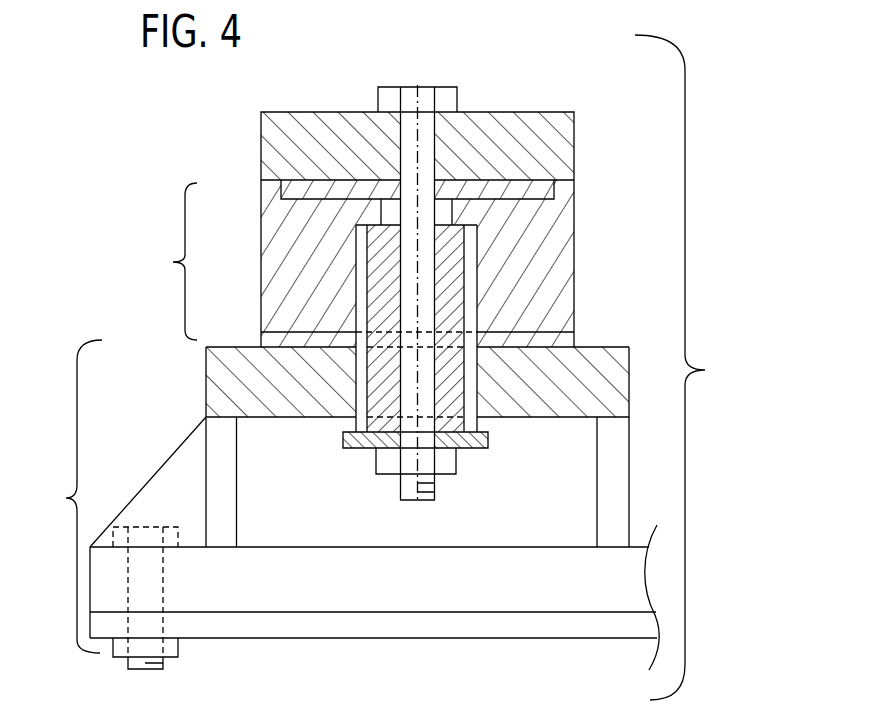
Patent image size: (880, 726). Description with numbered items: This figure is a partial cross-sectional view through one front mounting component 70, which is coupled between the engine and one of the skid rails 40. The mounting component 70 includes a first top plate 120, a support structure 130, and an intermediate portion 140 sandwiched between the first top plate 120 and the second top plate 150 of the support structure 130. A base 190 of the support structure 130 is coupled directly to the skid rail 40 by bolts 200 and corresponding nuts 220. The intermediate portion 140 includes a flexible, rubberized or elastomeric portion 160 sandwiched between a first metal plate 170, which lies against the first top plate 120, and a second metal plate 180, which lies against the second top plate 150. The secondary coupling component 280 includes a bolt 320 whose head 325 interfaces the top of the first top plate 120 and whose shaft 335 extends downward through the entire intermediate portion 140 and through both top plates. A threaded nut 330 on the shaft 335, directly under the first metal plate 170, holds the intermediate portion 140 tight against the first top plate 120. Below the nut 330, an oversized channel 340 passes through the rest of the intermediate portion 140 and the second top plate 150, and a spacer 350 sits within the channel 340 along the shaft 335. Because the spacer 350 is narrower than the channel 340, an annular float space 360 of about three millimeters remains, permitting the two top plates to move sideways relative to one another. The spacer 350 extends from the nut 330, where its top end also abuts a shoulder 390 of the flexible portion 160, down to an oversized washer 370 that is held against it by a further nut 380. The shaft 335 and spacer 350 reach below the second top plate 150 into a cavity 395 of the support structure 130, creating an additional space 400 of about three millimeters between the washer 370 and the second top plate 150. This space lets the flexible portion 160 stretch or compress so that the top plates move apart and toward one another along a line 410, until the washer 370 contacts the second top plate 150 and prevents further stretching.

The skid rail 40 is at (416, 652).
The front mounting component 70 is at (705, 370).
The first top plate 120 is at (255, 160).
The support structure 130 is at (66, 498).
The intermediate portion 140 is at (164, 261).
The second top plate 150 is at (197, 395).
The flexible portion 160 is at (575, 237).
The first metal plate 170 is at (553, 192).
The second metal plate 180 is at (574, 342).
The base 190 is at (272, 593).
The bolt 200 is at (164, 566).
The nut 220 is at (170, 645).
The secondary coupling component 280 is at (448, 150).
The bolt 320 is at (389, 147).
The head 325 is at (425, 87).
The threaded nut 330 is at (463, 212).
The shaft 335 is at (437, 170).
The channel 340 is at (489, 294).
The spacer 350 is at (350, 288).
The annular float space 360 is at (457, 373).
The oversized washer 370 is at (497, 459).
The nut 380 is at (462, 481).
The shoulder 390 is at (377, 212).
The cavity 395 is at (321, 509).
The additional space 400 is at (329, 426).
The line 410 is at (423, 512).